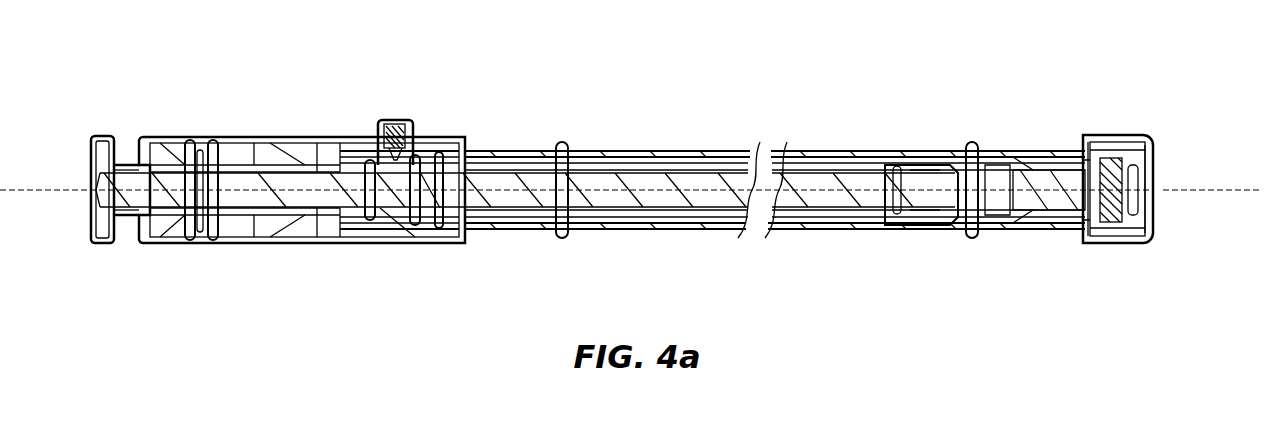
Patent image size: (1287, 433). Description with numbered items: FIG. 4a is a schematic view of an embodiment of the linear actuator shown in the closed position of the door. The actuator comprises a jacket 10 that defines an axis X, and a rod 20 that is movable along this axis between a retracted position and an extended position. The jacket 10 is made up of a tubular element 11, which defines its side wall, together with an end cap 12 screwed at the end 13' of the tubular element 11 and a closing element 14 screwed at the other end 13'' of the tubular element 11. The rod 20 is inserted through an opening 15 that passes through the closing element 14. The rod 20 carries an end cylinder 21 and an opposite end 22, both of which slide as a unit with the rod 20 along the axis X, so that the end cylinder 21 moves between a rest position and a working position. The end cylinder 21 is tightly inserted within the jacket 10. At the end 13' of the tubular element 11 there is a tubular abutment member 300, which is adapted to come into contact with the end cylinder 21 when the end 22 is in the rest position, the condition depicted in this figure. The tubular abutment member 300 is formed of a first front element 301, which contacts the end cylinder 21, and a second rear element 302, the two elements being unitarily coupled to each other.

The opposite end 22 is at (153, 94).
The other end of the tubular element 13'' is at (302, 234).
The opening 15 is at (300, 208).
The closing element 14 is at (335, 147).
The rod 20 is at (660, 200).
The jacket 10 is at (607, 133).
The tubular element 11 is at (855, 150).
The end cylinder 21 is at (994, 120).
The first front element 301 is at (1025, 150).
The second rear element 302 is at (1083, 238).
The tubular abutment member 300 is at (1088, 118).
The end cap 12 is at (1130, 140).
The end of the tubular element 13' is at (1112, 246).